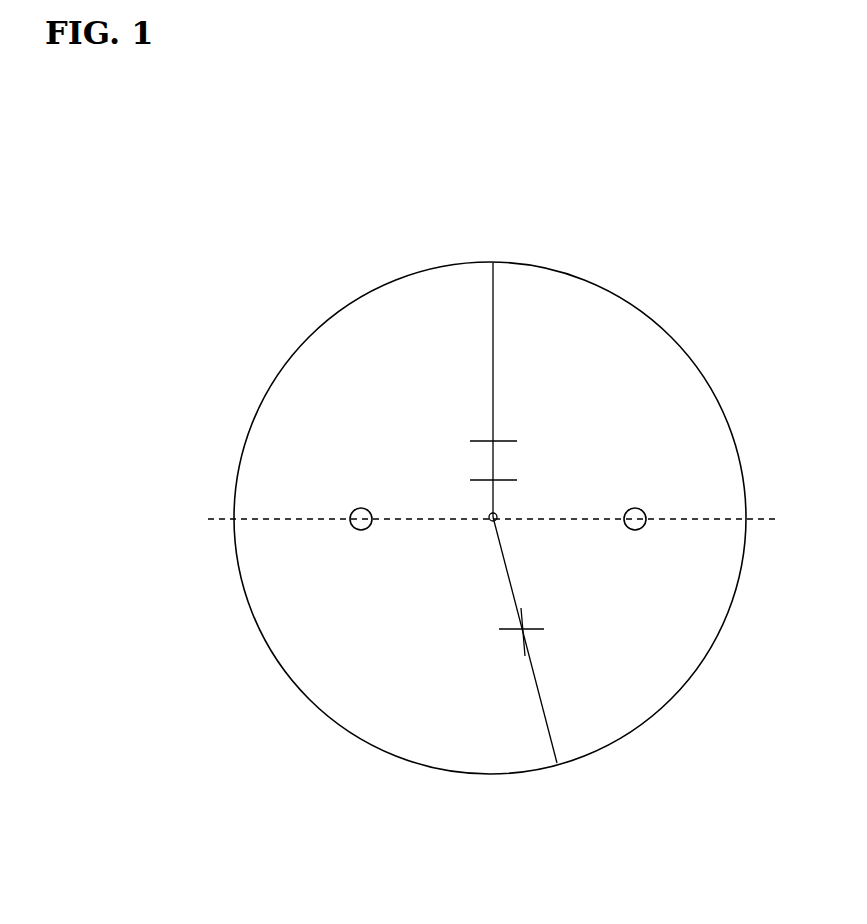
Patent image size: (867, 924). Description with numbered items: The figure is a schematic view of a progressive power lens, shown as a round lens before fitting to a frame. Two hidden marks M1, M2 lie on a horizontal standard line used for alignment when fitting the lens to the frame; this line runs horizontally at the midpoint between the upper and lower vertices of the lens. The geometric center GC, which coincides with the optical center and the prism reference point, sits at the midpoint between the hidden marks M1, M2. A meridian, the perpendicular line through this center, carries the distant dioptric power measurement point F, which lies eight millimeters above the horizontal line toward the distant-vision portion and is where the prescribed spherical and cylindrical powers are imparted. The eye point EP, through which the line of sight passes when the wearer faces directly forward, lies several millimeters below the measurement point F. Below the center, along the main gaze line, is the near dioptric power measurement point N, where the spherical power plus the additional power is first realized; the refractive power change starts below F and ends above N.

The hidden mark M1 is at (358, 500).
The hidden mark M2 is at (631, 500).
The distant dioptric power measurement point F is at (493, 440).
The eye point EP is at (493, 479).
The geometric center GC is at (500, 522).
The near dioptric power measurement point N is at (522, 640).